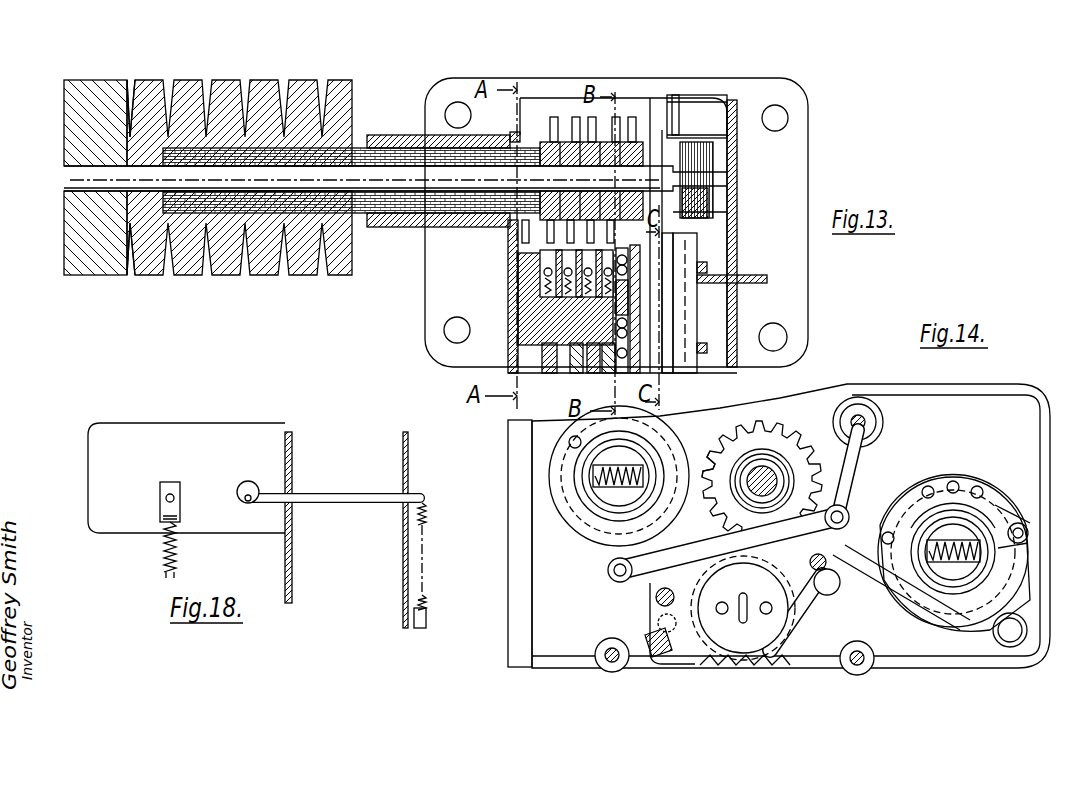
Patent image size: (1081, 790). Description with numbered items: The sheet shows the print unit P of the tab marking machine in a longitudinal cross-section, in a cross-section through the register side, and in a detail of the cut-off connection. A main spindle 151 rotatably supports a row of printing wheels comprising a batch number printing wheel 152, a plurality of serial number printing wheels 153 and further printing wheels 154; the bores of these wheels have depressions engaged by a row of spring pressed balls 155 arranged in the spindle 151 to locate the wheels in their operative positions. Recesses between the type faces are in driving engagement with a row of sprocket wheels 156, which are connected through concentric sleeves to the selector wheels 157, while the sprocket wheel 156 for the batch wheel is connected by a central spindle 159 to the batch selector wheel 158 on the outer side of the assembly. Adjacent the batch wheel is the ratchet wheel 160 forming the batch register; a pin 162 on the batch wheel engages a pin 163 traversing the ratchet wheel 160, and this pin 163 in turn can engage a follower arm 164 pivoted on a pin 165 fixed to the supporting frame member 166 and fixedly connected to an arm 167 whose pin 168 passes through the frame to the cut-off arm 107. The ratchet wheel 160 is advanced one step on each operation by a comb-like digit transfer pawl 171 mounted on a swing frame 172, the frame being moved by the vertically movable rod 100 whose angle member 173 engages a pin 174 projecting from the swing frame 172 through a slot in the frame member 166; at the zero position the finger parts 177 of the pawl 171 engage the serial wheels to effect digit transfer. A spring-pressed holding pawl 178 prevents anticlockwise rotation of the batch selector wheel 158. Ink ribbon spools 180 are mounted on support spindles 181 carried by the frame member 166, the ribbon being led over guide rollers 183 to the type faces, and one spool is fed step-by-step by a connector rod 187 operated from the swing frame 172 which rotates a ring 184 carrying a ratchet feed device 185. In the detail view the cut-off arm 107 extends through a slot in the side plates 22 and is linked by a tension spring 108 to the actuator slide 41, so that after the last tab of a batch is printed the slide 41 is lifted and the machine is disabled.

In FIG. 13, the main spindle 151 is at (537, 303).
In FIG. 13, the batch number printing wheel 152 is at (653, 380).
In FIG. 13, the serial number printing wheels 153 is at (616, 385).
In FIG. 13, the further printing wheels 154 is at (568, 385).
In FIG. 14, the further printing wheels 154 is at (790, 660).
In FIG. 13, the spring pressed balls 155 is at (547, 272).
In FIG. 13, the sprocket wheels 156 is at (576, 118).
In FIG. 14, the sprocket wheels 156 is at (788, 448).
In FIG. 13, the selector wheels 157 is at (352, 282).
In FIG. 13, the batch selector wheel 158 is at (104, 262).
In FIG. 13, the central spindle 159 is at (85, 180).
In FIG. 13, the ratchet wheel 160 is at (667, 330).
In FIG. 13, the pin 162 is at (752, 279).
In FIG. 13, the pin 163 is at (700, 272).
In FIG. 13, the follower arm 164 is at (713, 217).
In FIG. 13, the pin 165 is at (673, 212).
In FIG. 14, the pin 165 is at (842, 512).
In FIG. 13, the supporting frame member 166 is at (738, 160).
In FIG. 14, the supporting frame member 166 is at (905, 392).
In FIG. 13, the arm 167 is at (713, 260).
In FIG. 14, the arm 167 is at (608, 573).
In FIG. 18, the pin 168 is at (243, 507).
In FIG. 14, the digit transfer pawl 171 is at (648, 643).
In FIG. 13, the swing frame 172 is at (713, 353).
In FIG. 14, the swing frame 172 is at (808, 598).
In FIG. 18, the angle member 173 is at (180, 490).
In FIG. 14, the pin 174 is at (826, 592).
In FIG. 14, the comb-like finger parts 177 is at (653, 633).
In FIG. 14, the holding pawl 178 is at (850, 470).
In FIG. 13, the spools 180 is at (533, 124).
In FIG. 14, the spools 180 is at (583, 522).
In FIG. 14, the support spindles 181 is at (982, 545).
In FIG. 14, the guide rollers 183 is at (597, 647).
In FIG. 14, the ring 184 is at (983, 515).
In FIG. 14, the ratchet feed device 185 is at (903, 497).
In FIG. 14, the connector rod 187 is at (862, 583).
In FIG. 18, the rod 100 is at (167, 560).
In FIG. 18, the cut-off arm 107 is at (343, 497).
In FIG. 18, the tension spring 108 is at (427, 518).
In FIG. 18, the actuator slide 41 is at (420, 617).
In FIG. 18, the side plates 22 is at (293, 445).
In FIG. 18, the print unit P is at (143, 428).